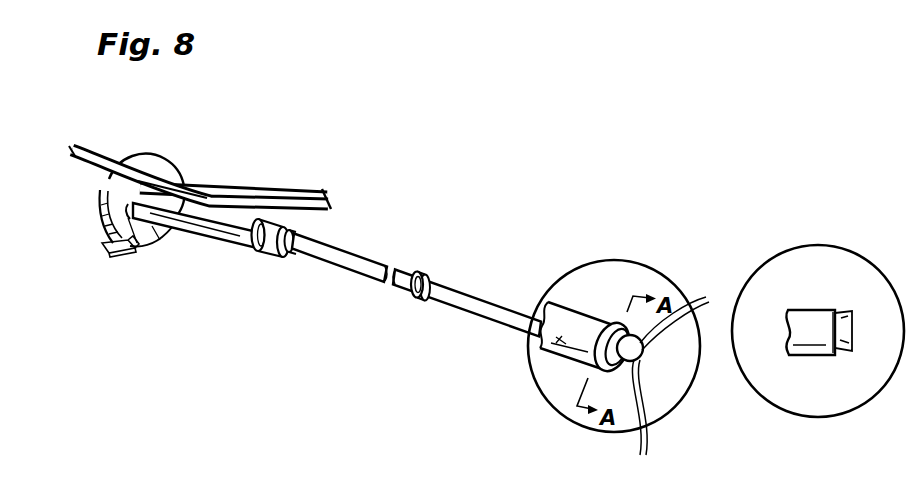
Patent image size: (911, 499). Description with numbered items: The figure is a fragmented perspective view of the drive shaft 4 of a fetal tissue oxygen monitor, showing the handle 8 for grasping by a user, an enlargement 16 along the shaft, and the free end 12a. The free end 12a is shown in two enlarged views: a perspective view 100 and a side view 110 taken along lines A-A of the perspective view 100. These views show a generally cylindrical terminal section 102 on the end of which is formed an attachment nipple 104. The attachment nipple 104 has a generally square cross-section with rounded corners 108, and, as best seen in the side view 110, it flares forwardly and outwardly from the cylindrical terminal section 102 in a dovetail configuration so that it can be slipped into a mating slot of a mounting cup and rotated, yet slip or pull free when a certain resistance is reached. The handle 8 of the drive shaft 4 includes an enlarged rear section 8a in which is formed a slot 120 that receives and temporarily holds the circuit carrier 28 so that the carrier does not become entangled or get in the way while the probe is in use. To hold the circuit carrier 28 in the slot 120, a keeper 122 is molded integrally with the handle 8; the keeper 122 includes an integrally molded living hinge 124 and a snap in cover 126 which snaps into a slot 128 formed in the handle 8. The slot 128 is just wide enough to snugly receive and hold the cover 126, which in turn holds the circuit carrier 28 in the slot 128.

The drive shaft 4 is at (366, 245).
The handle 8 is at (226, 258).
The enlarged rear section 8a is at (152, 156).
The free end 12a is at (571, 303).
The enlargement 16 is at (421, 276).
The circuit carrier 28 is at (97, 172).
The perspective view 100 is at (642, 256).
The cylindrical terminal section 102 is at (549, 368).
The attachment nipple 104 is at (641, 360).
The rounded corners 108 is at (712, 292).
The side view 110 is at (800, 237).
The slot 120 is at (112, 166).
The keeper 122 is at (94, 241).
The living hinge 124 is at (152, 238).
The snap in cover 126 is at (125, 254).
The slot 128 is at (204, 196).